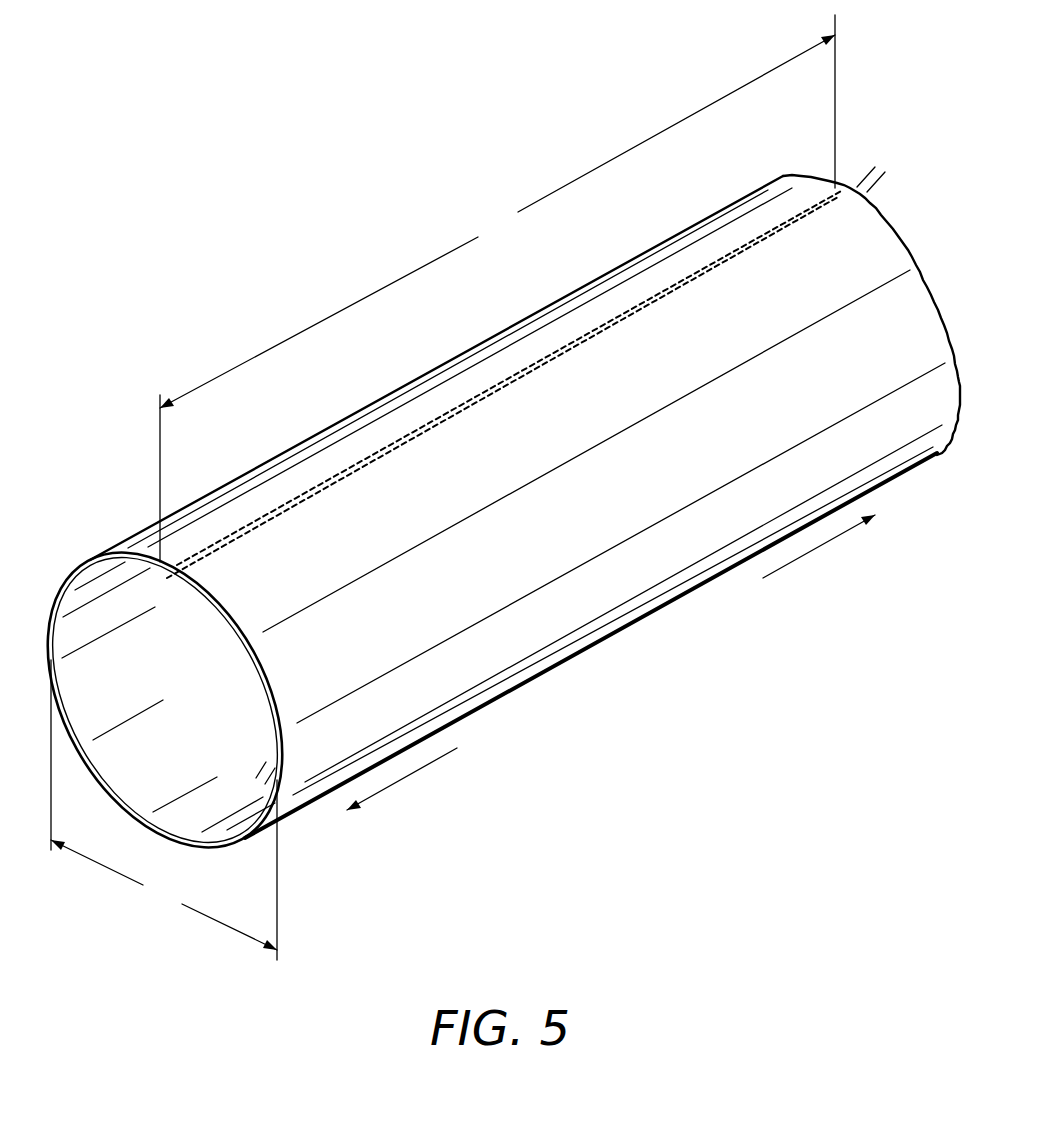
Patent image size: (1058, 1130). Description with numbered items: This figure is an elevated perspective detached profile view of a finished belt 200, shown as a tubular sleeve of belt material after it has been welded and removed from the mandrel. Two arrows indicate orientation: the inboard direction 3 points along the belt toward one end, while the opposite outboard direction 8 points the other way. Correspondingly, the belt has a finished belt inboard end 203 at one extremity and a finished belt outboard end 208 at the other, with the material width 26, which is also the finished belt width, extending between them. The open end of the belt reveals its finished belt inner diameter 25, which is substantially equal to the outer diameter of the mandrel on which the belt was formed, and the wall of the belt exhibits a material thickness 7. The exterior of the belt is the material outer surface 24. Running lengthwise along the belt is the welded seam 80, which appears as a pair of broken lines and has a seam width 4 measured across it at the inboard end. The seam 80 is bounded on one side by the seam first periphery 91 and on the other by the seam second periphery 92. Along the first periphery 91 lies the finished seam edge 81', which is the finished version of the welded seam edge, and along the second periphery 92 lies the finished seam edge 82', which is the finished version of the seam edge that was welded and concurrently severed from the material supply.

The finished belt 200 is at (630, 682).
The finished belt outboard end 208 is at (95, 767).
The finished belt inboard end 203 is at (817, 177).
The material outer surface 24 is at (660, 237).
The welded seam 80 is at (465, 403).
The finished version of the concurrently-severed-and-welded seam edge 82' is at (259, 407).
The seam second periphery 92 is at (313, 480).
The finished version of the welded seam edge 81' is at (379, 515).
The seam first periphery 91 is at (348, 473).
The seam width 4 is at (838, 172).
The material thickness 7 is at (274, 786).
The material width 26 is at (497, 288).
The finished belt inner diameter 25 is at (164, 810).
The outboard direction 8 is at (403, 778).
The inboard direction 3 is at (812, 552).